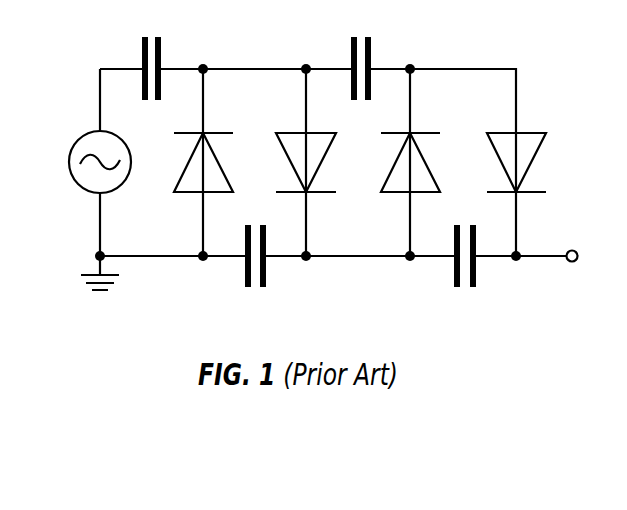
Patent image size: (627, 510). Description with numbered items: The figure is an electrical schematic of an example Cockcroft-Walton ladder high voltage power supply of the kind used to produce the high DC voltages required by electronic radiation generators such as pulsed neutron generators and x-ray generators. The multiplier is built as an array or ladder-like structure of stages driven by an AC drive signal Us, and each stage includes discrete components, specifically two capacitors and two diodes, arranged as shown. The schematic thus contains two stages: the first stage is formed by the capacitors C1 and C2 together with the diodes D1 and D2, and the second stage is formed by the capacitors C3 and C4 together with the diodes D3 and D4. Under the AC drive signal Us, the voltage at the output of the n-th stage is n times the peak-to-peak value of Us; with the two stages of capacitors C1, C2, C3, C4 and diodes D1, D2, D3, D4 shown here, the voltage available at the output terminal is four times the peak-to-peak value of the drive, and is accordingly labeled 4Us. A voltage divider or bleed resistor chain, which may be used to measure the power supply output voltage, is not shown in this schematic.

The AC drive signal Us is at (82, 159).
The capacitor C1 is at (170, 61).
The capacitor C2 is at (273, 268).
The capacitor C3 is at (379, 61).
The capacitor C4 is at (483, 268).
The diode D1 is at (205, 141).
The diode D2 is at (309, 141).
The diode D3 is at (412, 141).
The diode D4 is at (517, 141).
The output voltage 4Us is at (572, 279).